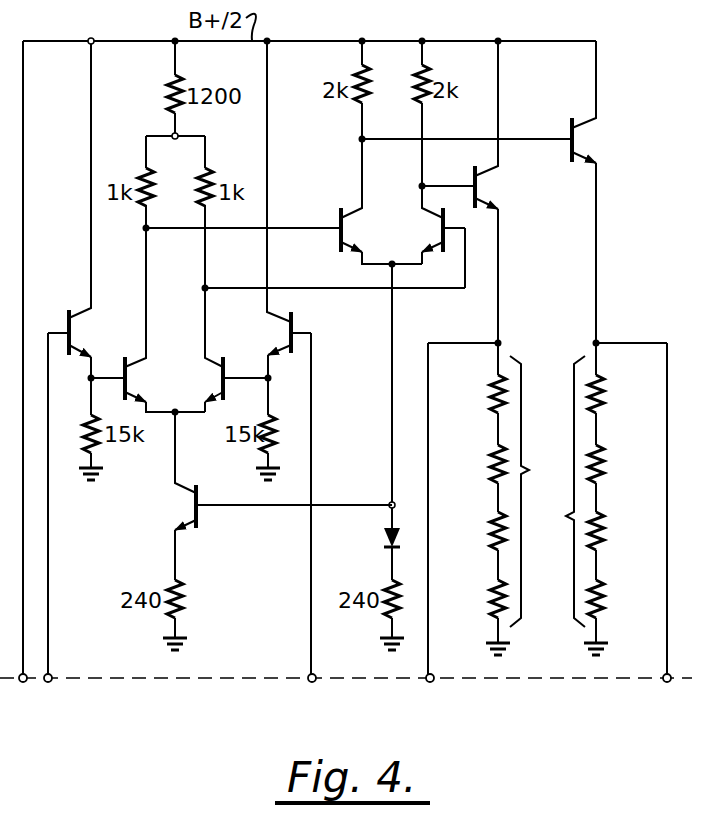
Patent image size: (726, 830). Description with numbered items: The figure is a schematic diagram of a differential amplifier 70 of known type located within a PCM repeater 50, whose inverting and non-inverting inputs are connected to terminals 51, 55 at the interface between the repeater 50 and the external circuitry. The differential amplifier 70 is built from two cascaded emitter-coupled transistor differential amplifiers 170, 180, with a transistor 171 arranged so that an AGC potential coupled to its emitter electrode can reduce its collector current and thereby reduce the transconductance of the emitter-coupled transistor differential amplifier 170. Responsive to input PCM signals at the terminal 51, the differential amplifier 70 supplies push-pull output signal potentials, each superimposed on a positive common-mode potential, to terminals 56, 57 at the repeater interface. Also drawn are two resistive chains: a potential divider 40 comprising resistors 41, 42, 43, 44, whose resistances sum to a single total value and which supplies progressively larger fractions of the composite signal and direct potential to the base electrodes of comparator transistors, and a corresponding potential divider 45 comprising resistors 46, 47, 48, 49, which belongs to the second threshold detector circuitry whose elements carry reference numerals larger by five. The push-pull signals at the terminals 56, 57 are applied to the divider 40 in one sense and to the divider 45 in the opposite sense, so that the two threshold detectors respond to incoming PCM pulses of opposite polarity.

The potential divider 40 is at (538, 491).
The resistor 41 is at (490, 600).
The resistor 42 is at (488, 532).
The resistor 43 is at (488, 468).
The resistor 44 is at (486, 400).
The potential divider 45 is at (560, 491).
The resistor 46 is at (606, 594).
The resistor 47 is at (606, 525).
The resistor 48 is at (606, 458).
The resistor 49 is at (606, 392).
The PCM repeater 50 is at (163, 679).
The terminal 51 is at (50, 682).
The terminal 55 is at (313, 682).
The terminal 56 is at (430, 682).
The terminal 57 is at (667, 682).
The differential amplifier 70 is at (368, 429).
The emitter-coupled transistor differential amplifier 170 is at (196, 393).
The transistor 171 is at (181, 498).
The emitter-coupled transistor differential amplifier 180 is at (412, 245).